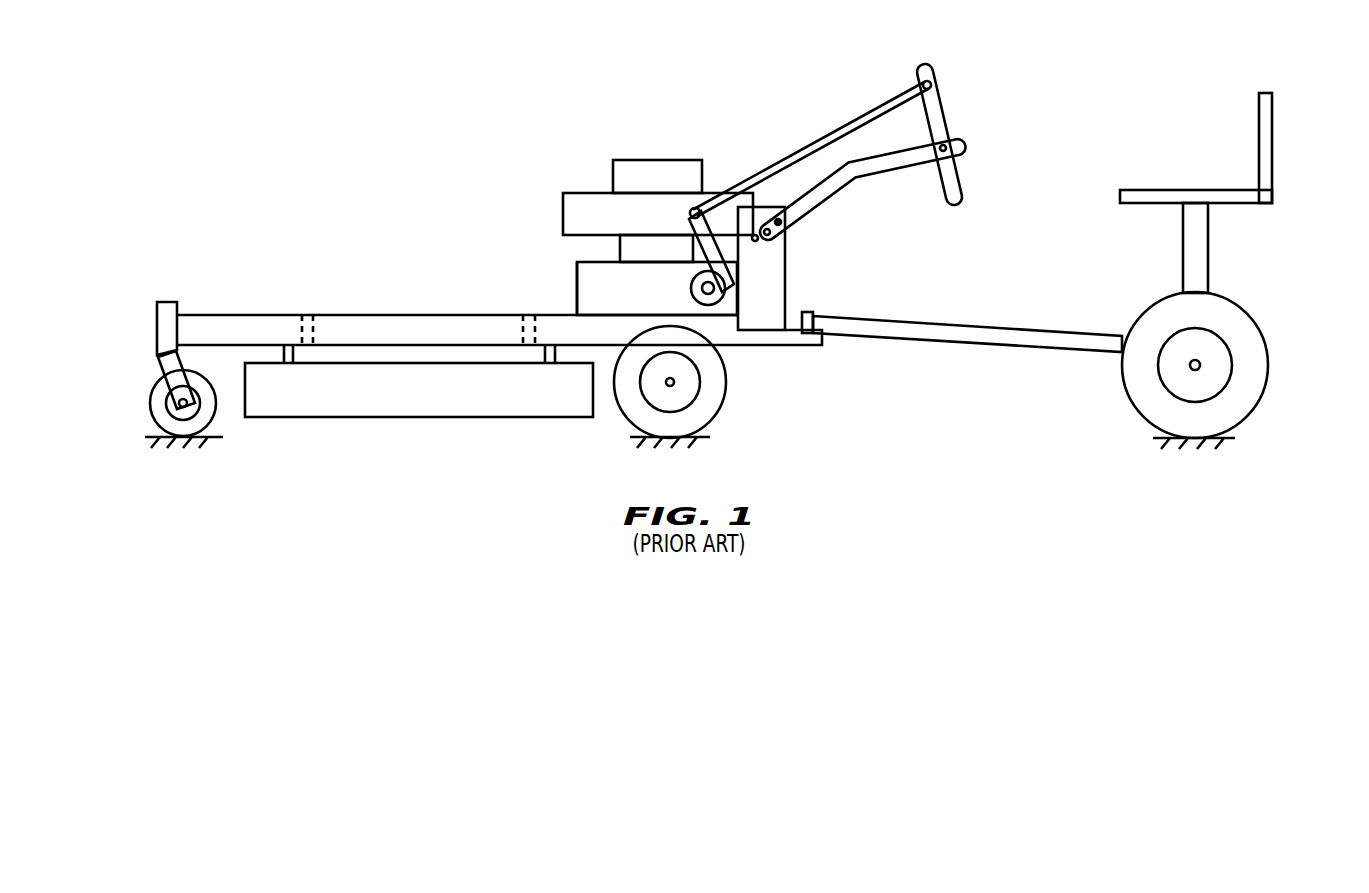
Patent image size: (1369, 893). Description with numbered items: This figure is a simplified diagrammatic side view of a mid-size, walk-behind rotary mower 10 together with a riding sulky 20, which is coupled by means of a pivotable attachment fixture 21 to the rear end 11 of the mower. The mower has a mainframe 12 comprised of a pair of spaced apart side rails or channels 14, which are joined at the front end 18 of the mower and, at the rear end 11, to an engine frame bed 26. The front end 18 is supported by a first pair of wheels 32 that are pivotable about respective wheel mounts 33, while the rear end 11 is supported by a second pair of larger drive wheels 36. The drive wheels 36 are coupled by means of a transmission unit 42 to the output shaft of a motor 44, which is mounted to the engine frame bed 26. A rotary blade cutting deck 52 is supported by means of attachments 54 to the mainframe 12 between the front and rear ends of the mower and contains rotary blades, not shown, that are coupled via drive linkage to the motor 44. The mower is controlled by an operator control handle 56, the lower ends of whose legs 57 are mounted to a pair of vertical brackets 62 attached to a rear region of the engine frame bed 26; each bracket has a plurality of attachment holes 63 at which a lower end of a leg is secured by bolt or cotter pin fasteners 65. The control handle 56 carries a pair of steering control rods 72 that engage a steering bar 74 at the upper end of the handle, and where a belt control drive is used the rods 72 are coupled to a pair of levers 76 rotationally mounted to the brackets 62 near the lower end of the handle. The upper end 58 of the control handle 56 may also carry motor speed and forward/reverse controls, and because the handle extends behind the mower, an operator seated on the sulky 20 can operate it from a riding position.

The walk-behind rotary mower 10 is at (315, 150).
The rear end 11 is at (790, 348).
The mainframe 12 is at (198, 290).
The side rail 14 is at (395, 315).
The front end 18 is at (157, 328).
The sulky 20 is at (1260, 255).
The pivotable attachment fixture 21 is at (807, 312).
The engine frame bed 26 is at (598, 316).
The front wheel 32 is at (150, 397).
The caster posts 33 is at (167, 302).
The drive wheel 36 is at (727, 405).
The transmission unit 42 is at (691, 290).
The motor 44 is at (577, 278).
The rotary blade cutting deck 52 is at (450, 418).
The attachments 54 is at (285, 345).
The operator control handle 56 is at (906, 180).
The legs 57 is at (805, 210).
The upper end 58 is at (963, 140).
The vertical bracket 62 is at (785, 262).
The attachment holes 63 is at (752, 232).
The bolt/cotter pin fasteners 65 is at (778, 219).
The steering control rods 72 is at (857, 118).
The steering bar 74 is at (940, 103).
The lever 76 is at (690, 208).